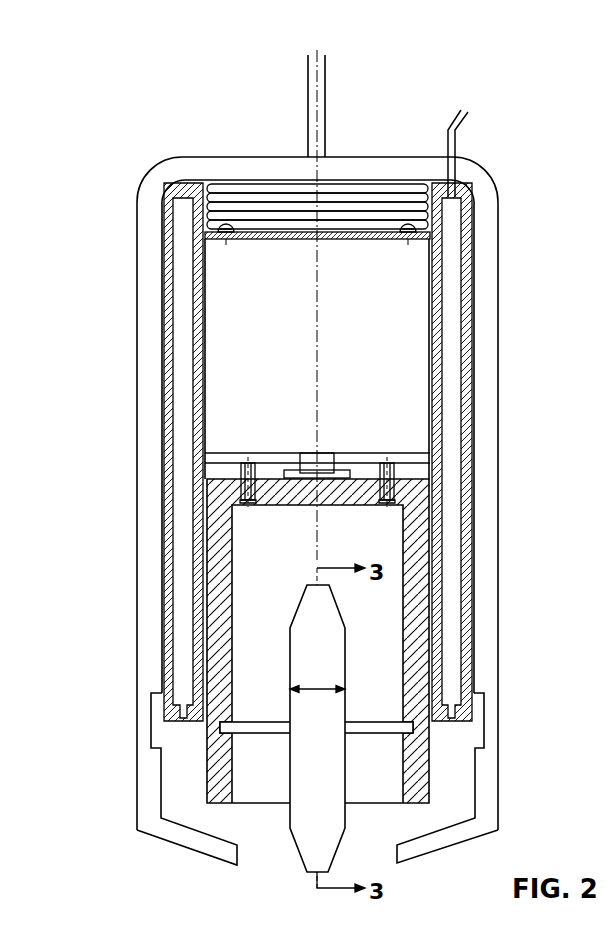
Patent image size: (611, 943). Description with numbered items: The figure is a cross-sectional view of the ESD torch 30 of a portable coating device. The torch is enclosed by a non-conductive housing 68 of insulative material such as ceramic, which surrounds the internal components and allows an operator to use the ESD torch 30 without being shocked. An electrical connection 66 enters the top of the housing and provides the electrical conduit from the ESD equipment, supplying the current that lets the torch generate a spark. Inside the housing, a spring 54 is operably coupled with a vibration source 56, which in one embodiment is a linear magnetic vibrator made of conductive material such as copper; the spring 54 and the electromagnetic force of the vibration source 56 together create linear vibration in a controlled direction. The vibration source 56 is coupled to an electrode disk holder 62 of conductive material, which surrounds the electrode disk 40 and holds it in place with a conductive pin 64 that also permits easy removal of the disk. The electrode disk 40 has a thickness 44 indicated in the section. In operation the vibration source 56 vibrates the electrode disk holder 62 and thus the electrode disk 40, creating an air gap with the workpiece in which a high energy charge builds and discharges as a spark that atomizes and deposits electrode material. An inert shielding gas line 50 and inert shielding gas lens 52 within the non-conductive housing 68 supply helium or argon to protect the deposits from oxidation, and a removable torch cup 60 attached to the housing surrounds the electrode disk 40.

The ESD torch 30 is at (106, 119).
The electrode disk 40 is at (302, 658).
The thickness 44 is at (330, 688).
The inert shielding gas line 50 is at (464, 112).
The inert shielding gas lens 52 is at (450, 287).
The spring 54 is at (413, 183).
The vibration source 56 is at (412, 378).
The torch cup 60 is at (490, 800).
The electrode disk holder 62 is at (415, 612).
The conductive pin 64 is at (400, 727).
The electrical connection 66 is at (320, 88).
The non-conductive housing 68 is at (148, 319).